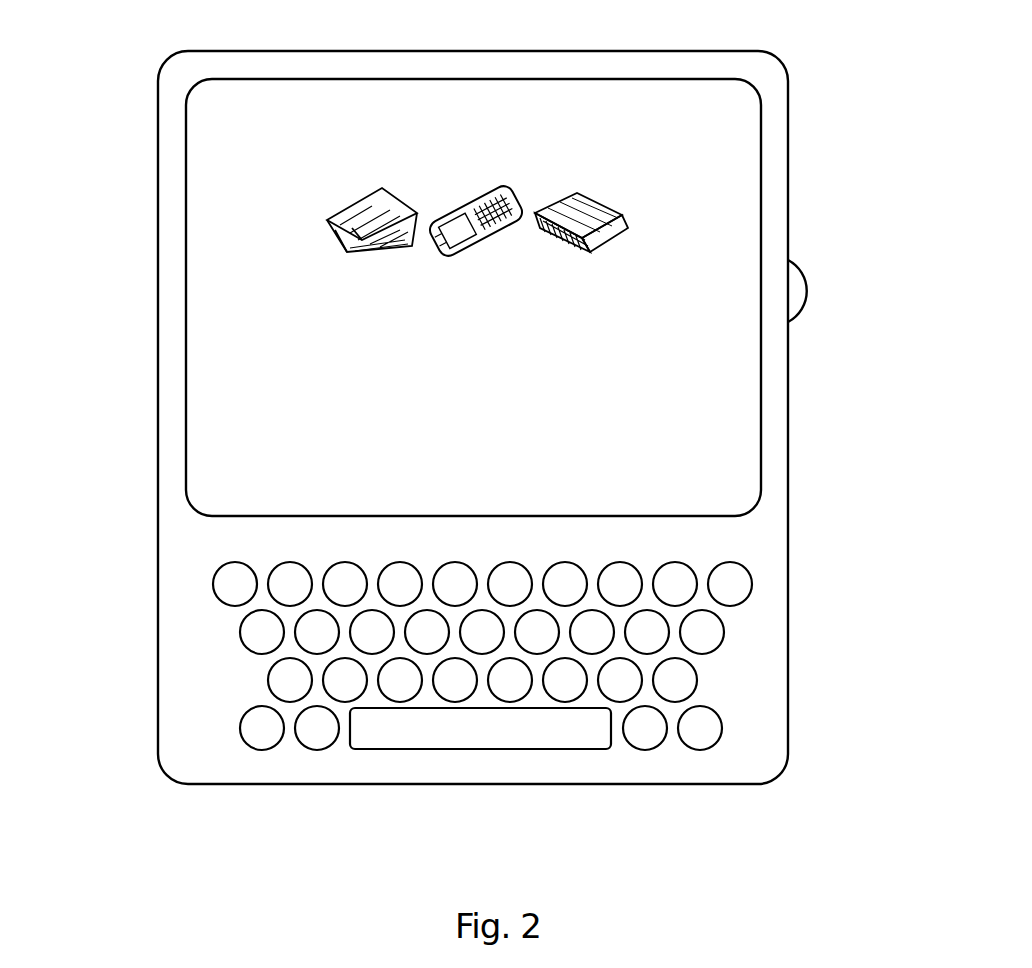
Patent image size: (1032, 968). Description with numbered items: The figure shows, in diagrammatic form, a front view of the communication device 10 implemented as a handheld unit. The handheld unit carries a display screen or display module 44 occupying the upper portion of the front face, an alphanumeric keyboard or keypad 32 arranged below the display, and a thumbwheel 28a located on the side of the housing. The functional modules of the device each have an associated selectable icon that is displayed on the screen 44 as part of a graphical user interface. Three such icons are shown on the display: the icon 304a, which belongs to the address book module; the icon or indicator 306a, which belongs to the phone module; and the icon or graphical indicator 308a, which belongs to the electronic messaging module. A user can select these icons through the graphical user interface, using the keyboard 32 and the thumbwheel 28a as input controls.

The communication device 10 is at (158, 40).
The display screen 44 is at (252, 450).
The thumbwheel 28a is at (807, 291).
The alphanumeric keyboard 32 is at (768, 673).
The icon 308a is at (353, 258).
The icon 306a is at (480, 242).
The icon 304a is at (578, 250).